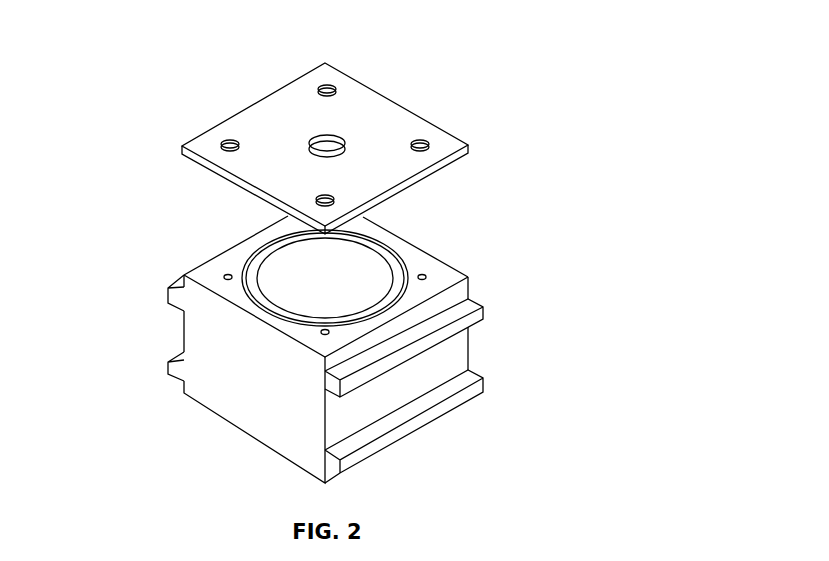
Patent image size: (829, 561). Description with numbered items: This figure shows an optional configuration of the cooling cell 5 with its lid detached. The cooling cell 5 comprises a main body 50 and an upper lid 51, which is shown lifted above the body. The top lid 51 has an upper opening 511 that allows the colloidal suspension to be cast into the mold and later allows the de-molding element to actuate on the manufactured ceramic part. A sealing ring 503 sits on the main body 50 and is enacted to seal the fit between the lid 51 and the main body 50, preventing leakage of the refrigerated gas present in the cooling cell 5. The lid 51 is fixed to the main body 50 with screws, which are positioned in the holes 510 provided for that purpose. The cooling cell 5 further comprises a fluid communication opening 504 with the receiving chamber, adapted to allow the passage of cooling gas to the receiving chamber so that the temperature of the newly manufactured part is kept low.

The cooling cell 5 is at (328, 252).
The main body 50 is at (247, 383).
The upper lid 51 is at (263, 132).
The sealing ring 503 is at (258, 243).
The fluid communication opening 504 is at (170, 285).
The holes 510 is at (320, 85).
The upper opening 511 is at (335, 138).